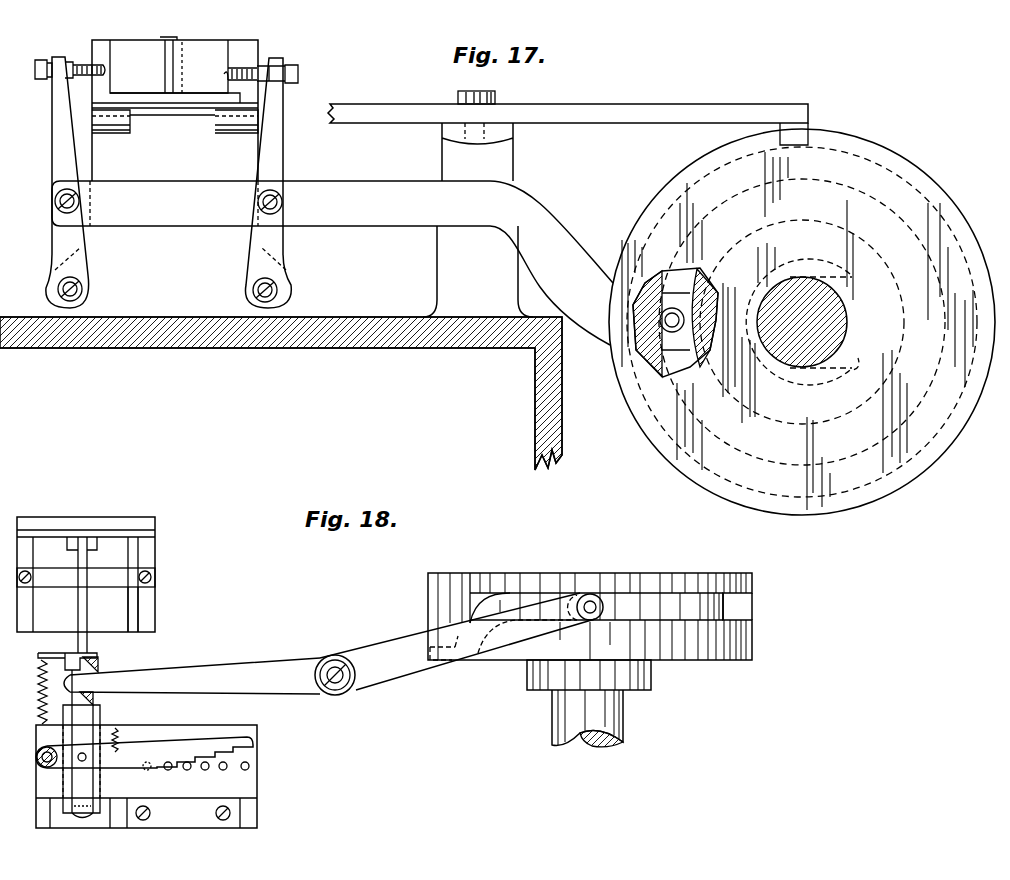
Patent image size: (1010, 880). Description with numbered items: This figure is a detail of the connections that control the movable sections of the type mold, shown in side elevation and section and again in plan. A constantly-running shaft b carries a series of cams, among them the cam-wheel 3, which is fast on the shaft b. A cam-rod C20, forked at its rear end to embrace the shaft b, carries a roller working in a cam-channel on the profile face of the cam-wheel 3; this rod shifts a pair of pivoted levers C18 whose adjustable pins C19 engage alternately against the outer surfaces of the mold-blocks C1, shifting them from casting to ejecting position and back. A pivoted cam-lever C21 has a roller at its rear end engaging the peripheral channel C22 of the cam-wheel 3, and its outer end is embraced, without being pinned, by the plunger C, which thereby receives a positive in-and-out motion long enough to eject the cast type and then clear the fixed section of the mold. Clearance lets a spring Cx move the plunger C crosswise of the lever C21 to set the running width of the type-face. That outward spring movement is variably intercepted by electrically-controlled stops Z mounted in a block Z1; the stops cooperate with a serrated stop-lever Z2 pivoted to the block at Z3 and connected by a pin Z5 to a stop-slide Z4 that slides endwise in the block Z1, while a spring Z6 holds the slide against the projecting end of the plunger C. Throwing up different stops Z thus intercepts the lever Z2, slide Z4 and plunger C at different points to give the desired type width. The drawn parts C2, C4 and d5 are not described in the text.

In FIG. 17, the mold-blocks C1 is at (203, 50).
In FIG. 18, the mold-blocks C1 is at (53, 627).
In FIG. 17, the frame / holder C2 is at (143, 112).
In FIG. 18, the frame / holder C2 is at (53, 523).
In FIG. 17, the cross piece C4 is at (215, 100).
In FIG. 18, the cross piece C4 is at (133, 623).
In FIG. 17, the pivoted levers C18 is at (283, 148).
In FIG. 17, the adjustable pins C19 is at (265, 58).
In FIG. 17, the cam-rod C20 is at (403, 231).
In FIG. 17, the pivoted cam-lever C21 is at (582, 112).
In FIG. 18, the pivoted cam-lever C21 is at (248, 670).
In FIG. 17, the peripheral channel C22 is at (848, 151).
In FIG. 18, the peripheral channel C22 is at (672, 607).
In FIG. 17, the cam-wheel 3 is at (672, 187).
In FIG. 18, the cam-wheel 3 is at (683, 650).
In FIG. 17, the shaft b is at (827, 327).
In FIG. 18, the shaft b is at (612, 720).
In FIG. 18, the slot d5 is at (88, 533).
In FIG. 18, the plunger C is at (88, 651).
In FIG. 18, the spring Cx is at (39, 661).
In FIG. 18, the electrically-controlled stops Z is at (244, 770).
In FIG. 18, the block Z1 is at (245, 785).
In FIG. 18, the stop-lever Z2 is at (172, 748).
In FIG. 18, the pivot Z3 is at (43, 763).
In FIG. 18, the stop-slide Z4 is at (88, 717).
In FIG. 18, the pin Z5 is at (82, 762).
In FIG. 18, the spring Z6 is at (120, 740).